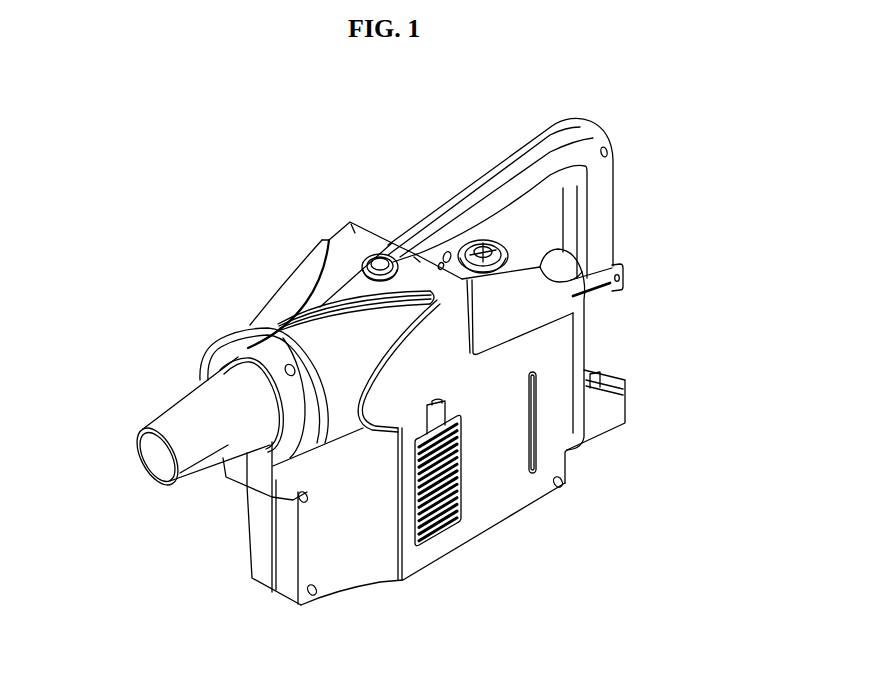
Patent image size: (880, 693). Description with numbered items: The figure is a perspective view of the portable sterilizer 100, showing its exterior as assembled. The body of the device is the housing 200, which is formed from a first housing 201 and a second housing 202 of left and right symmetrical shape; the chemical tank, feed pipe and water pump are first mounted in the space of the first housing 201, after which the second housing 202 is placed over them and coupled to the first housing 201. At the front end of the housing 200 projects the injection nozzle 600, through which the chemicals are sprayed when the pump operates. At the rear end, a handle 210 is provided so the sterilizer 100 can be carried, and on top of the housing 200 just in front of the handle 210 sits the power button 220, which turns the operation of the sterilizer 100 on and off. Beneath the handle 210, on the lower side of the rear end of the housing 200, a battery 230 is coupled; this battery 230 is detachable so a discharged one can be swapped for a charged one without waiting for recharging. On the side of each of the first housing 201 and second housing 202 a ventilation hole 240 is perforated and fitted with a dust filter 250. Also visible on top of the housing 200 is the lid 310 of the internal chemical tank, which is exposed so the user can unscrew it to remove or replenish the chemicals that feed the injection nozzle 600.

The portable sterilizer 100 is at (107, 117).
The housing 200 is at (430, 144).
The first housing 201 is at (353, 232).
The second housing 202 is at (422, 283).
The handle 210 is at (607, 175).
The power button 220 is at (364, 258).
The battery 230 is at (597, 343).
The ventilation hole 240 is at (458, 508).
The dust filter 250 is at (447, 530).
The lid 310 is at (497, 243).
The injection nozzle 600 is at (167, 403).